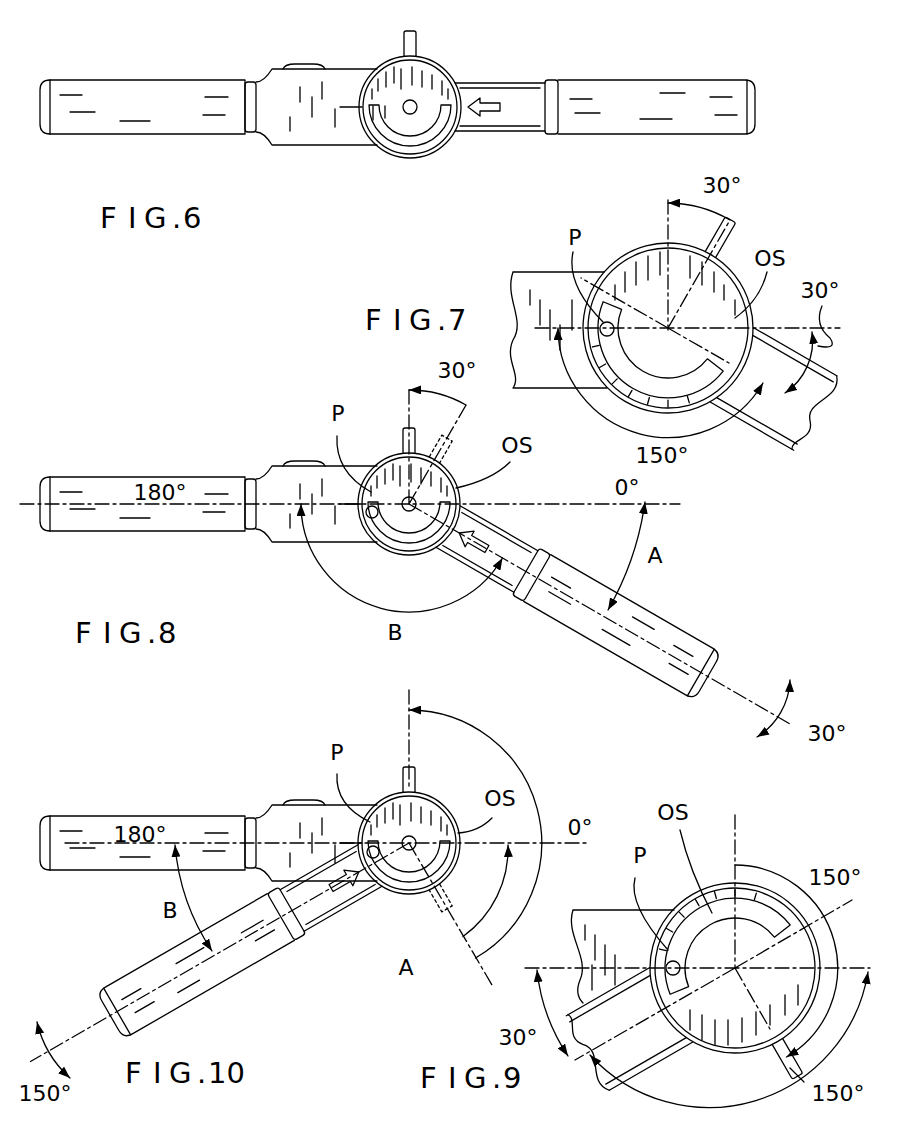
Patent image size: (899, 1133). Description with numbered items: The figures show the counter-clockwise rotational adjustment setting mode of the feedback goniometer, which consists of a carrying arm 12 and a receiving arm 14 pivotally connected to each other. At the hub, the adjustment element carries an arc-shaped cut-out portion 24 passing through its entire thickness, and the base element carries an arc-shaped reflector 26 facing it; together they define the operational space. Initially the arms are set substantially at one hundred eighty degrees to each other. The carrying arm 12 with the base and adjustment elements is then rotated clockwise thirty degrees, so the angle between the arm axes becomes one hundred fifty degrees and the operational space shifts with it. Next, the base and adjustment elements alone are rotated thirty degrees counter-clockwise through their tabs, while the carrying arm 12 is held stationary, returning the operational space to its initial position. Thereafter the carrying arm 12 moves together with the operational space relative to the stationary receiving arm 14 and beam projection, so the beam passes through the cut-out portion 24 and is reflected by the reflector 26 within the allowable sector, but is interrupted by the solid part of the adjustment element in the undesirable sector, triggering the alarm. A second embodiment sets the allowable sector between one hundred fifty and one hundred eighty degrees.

In FIG. 6, the carrying arm 12 is at (612, 90).
In FIG. 7, the carrying arm 12 is at (772, 425).
In FIG. 8, the carrying arm 12 is at (678, 674).
In FIG. 10, the carrying arm 12 is at (265, 950).
In FIG. 9, the carrying arm 12 is at (655, 1062).
In FIG. 6, the receiving arm 14 is at (140, 95).
In FIG. 7, the receiving arm 14 is at (553, 290).
In FIG. 8, the receiving arm 14 is at (110, 493).
In FIG. 10, the receiving arm 14 is at (108, 830).
In FIG. 9, the receiving arm 14 is at (612, 940).
In FIG. 6, the cut-out portion 24 is at (437, 140).
In FIG. 6, the reflector 26 is at (373, 147).